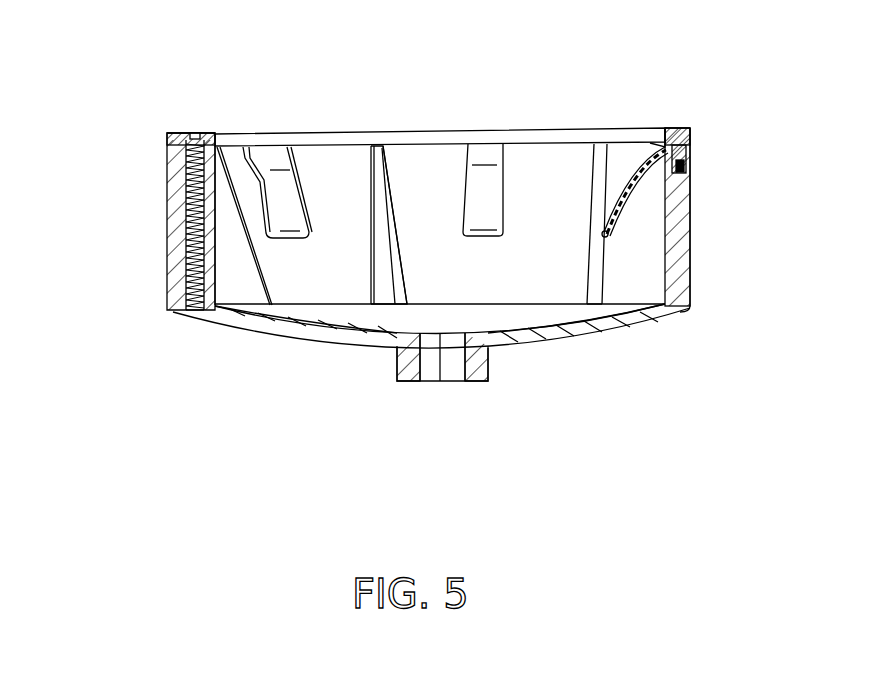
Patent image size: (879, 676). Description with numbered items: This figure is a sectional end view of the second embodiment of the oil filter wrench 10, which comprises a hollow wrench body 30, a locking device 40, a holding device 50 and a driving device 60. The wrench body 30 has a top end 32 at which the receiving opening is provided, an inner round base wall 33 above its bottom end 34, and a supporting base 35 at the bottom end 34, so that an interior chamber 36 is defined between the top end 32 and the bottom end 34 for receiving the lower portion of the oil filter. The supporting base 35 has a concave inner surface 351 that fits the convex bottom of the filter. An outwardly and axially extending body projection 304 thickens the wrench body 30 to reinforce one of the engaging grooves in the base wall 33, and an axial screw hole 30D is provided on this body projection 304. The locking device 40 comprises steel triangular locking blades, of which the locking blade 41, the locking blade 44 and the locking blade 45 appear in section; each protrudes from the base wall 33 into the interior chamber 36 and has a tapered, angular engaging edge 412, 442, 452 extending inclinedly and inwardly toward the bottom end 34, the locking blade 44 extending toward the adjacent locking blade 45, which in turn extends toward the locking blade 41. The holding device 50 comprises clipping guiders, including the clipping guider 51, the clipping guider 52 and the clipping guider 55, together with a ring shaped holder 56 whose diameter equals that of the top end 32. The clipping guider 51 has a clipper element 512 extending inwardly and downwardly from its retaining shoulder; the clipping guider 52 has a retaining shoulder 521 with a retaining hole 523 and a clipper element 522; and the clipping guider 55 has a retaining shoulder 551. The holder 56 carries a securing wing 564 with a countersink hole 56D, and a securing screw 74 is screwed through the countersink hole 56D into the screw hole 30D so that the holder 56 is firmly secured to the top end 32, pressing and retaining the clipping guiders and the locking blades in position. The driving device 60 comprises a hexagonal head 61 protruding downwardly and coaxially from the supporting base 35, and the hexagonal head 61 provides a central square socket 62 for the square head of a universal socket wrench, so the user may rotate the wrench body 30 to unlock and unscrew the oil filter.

The oil filter wrench 10 is at (727, 400).
The wrench body 30 is at (690, 225).
The screw hole 30D is at (193, 308).
The body projection 304 is at (167, 245).
The top end 32 is at (697, 158).
The inner round base wall 33 is at (345, 150).
The bottom end 34 is at (662, 280).
The supporting base 35 is at (620, 322).
The concave inner surface 351 is at (278, 337).
The interior chamber 36 is at (505, 292).
The locking device 40 is at (412, 213).
The locking blade 41 is at (583, 185).
The engaging edge 412 is at (592, 270).
The locking blade 44 is at (237, 147).
The engaging edge 442 is at (255, 267).
The locking blade 45 is at (397, 148).
The engaging edge 452 is at (390, 252).
The holding device 50 is at (617, 124).
The clipping guider 51 is at (518, 168).
The clipper element 512 is at (490, 185).
The clipping guider 52 is at (697, 142).
The retaining shoulder 521 is at (675, 128).
The clipper element 522 is at (690, 200).
The retaining hole 523 is at (690, 165).
The clipping guider 55 is at (301, 140).
The retaining shoulder 551 is at (292, 200).
The holder 56 is at (305, 156).
The securing wing 564 is at (207, 133).
The countersink hole 56D is at (167, 140).
The driving device 60 is at (507, 372).
The hexagonal head 61 is at (405, 362).
The central square socket 62 is at (448, 370).
The securing screw 74 is at (167, 183).